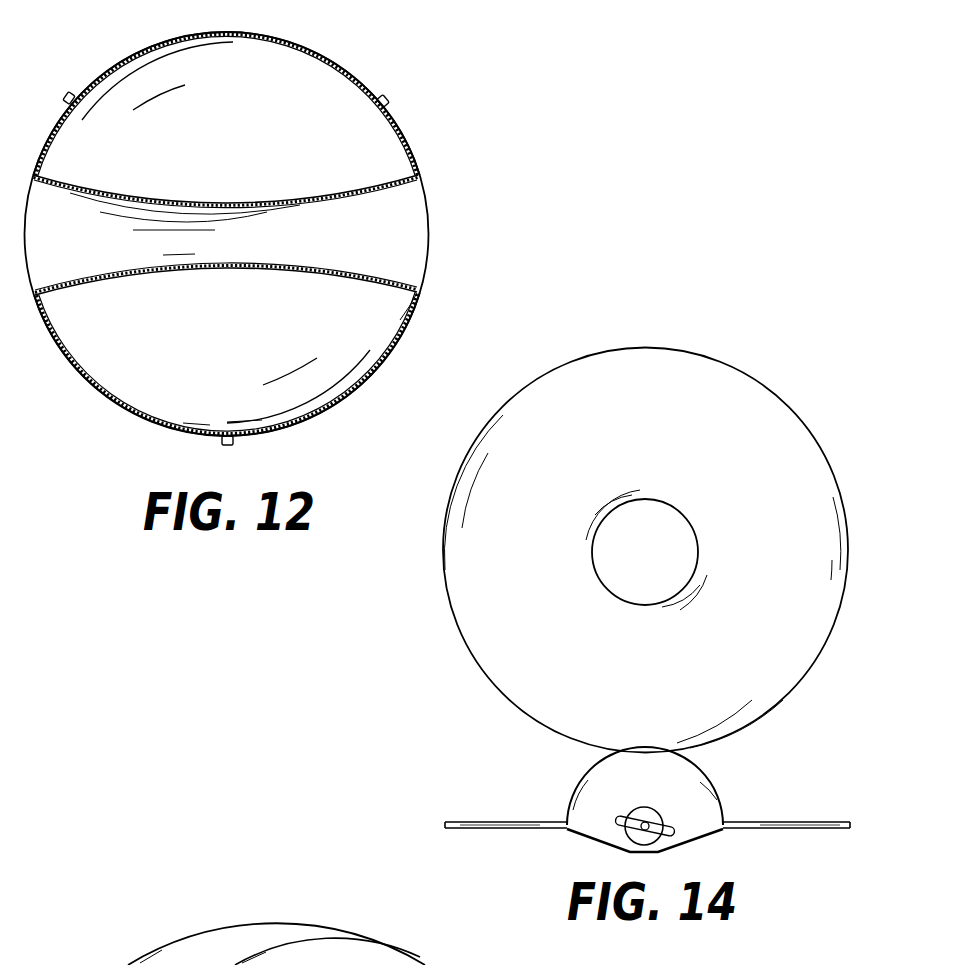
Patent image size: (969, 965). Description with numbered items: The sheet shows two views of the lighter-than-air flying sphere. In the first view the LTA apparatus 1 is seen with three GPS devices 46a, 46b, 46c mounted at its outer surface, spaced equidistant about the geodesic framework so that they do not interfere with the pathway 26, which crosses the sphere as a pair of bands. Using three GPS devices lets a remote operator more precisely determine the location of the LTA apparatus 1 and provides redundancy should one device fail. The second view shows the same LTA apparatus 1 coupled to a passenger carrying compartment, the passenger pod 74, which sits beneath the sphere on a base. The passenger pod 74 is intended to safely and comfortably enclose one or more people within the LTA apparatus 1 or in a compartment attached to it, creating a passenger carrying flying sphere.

In FIG. 12, the LTA apparatus 1 is at (352, 76).
In FIG. 14, the LTA apparatus 1 is at (780, 400).
In FIG. 12, the pathway 26 is at (231, 272).
In FIG. 12, the GPS device 46a is at (222, 443).
In FIG. 12, the GPS device 46b is at (68, 98).
In FIG. 12, the GPS device 46c is at (387, 99).
In FIG. 14, the passenger pod 74 is at (718, 791).